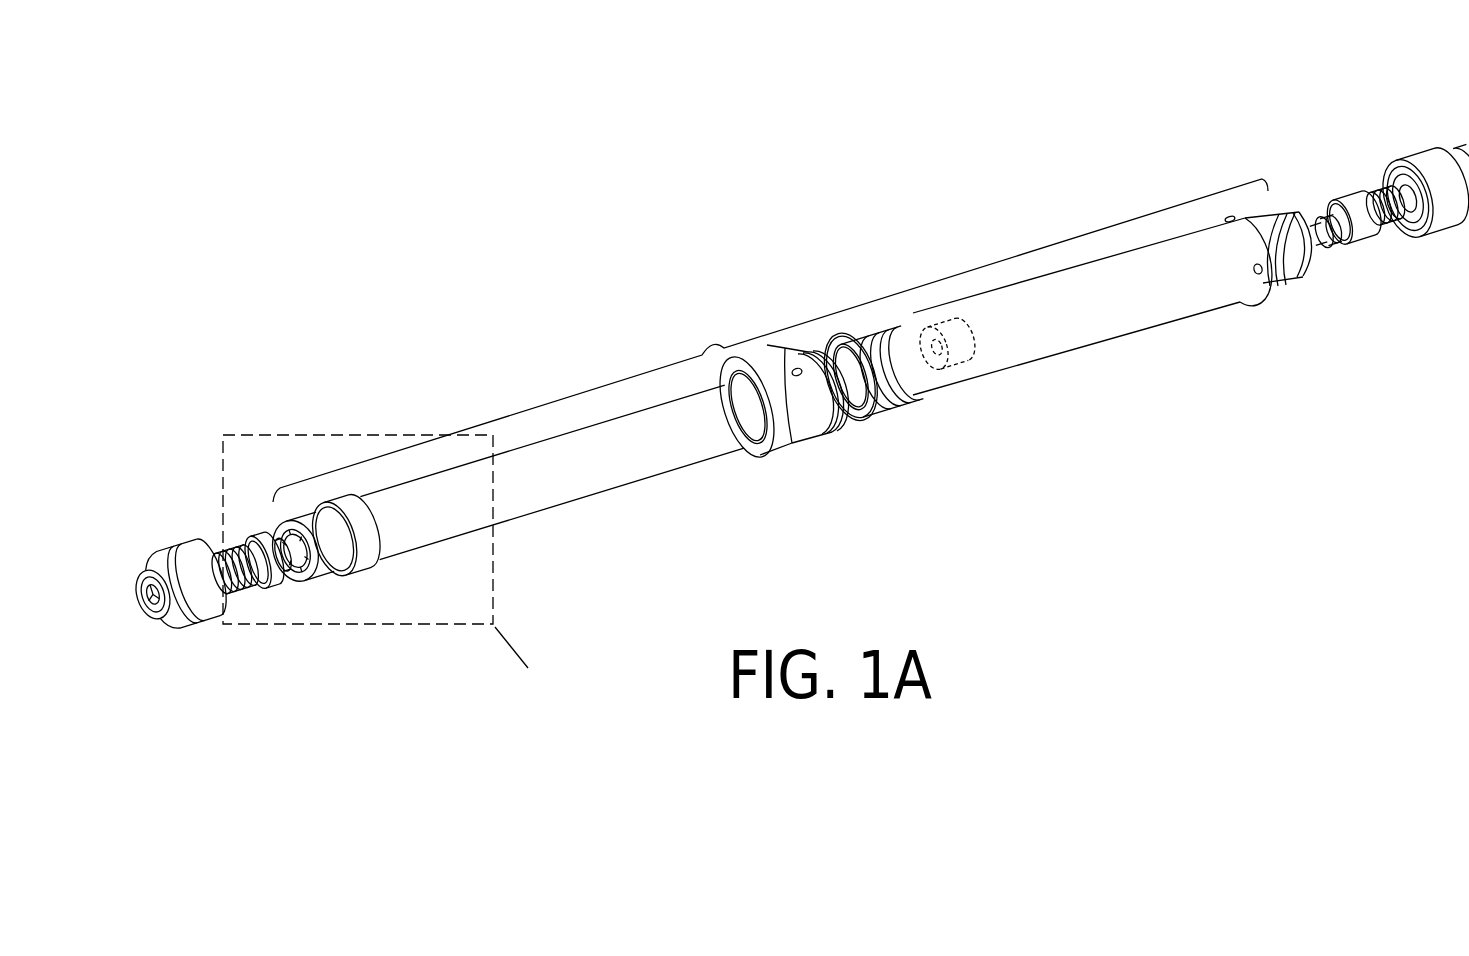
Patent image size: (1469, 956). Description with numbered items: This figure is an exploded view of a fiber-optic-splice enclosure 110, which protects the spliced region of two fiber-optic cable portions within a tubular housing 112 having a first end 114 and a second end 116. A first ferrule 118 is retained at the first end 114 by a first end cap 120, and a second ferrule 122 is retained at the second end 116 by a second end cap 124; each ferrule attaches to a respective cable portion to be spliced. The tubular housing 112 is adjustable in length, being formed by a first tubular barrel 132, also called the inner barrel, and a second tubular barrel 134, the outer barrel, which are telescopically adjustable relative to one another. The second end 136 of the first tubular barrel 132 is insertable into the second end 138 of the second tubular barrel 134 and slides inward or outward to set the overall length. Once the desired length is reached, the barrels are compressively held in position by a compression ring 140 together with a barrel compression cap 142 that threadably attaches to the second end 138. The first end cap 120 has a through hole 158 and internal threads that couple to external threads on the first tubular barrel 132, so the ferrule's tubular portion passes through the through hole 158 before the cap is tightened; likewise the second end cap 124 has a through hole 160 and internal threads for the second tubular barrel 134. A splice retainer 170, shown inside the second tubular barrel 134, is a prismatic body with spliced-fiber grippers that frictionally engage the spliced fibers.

The fiber-optic-splice enclosure 110 is at (444, 100).
The tubular housing 112 is at (770, 340).
The first end 114 is at (318, 590).
The second end 116 is at (1298, 286).
The first ferrule 118 is at (268, 538).
The first end cap 120 is at (182, 601).
The second ferrule 122 is at (1350, 195).
The second end cap 124 is at (1412, 201).
The first tubular barrel 132 is at (591, 488).
The second tubular barrel 134 is at (1115, 312).
The second end of the first tubular barrel 136 is at (818, 437).
The second end of the second tubular barrel 138 is at (890, 420).
The compression ring 140 is at (833, 422).
The barrel compression cap 142 is at (801, 428).
The through hole 158 is at (180, 556).
The through hole 160 is at (1428, 159).
The splice retainer 170 is at (975, 348).